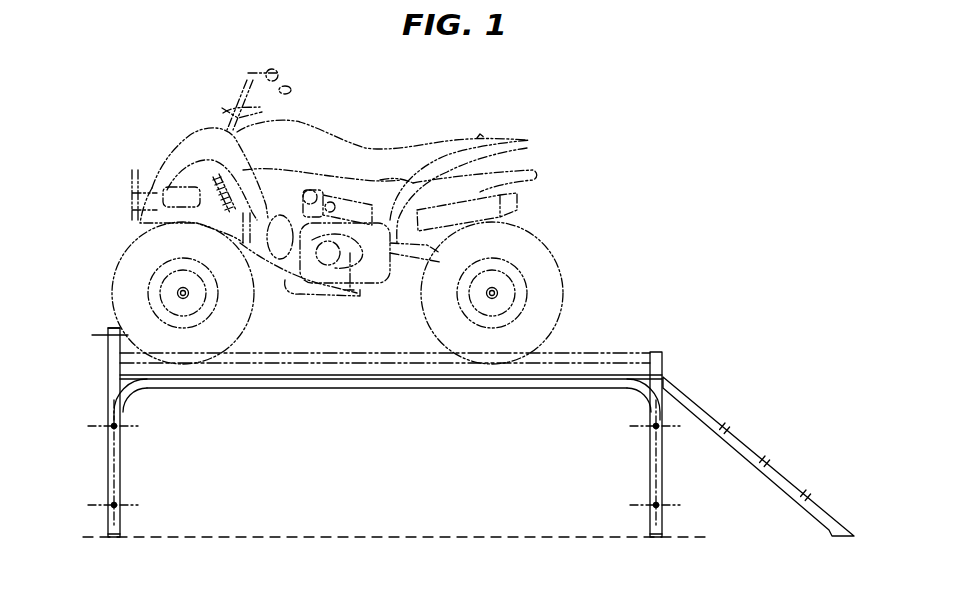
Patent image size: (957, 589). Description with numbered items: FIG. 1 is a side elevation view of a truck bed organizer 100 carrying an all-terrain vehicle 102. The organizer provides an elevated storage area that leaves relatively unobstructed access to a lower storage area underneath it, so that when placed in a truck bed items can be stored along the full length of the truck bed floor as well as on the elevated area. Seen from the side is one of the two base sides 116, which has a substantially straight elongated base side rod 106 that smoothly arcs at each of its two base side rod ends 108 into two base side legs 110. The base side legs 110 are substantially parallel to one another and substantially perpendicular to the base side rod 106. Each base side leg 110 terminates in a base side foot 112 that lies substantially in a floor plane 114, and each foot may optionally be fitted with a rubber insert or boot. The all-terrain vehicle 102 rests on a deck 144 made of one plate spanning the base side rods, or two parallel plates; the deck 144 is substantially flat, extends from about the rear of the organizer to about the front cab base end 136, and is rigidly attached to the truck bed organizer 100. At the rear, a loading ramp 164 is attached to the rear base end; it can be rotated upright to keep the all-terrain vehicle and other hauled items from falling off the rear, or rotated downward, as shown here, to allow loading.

The truck bed organizer 100 is at (640, 315).
The all-terrain vehicle 102 is at (536, 128).
The base side rod 106 is at (325, 389).
The base side rod end 108 is at (126, 398).
The base side leg 110 is at (121, 468).
The base side foot 112 is at (121, 535).
The floor plane 114 is at (343, 537).
The base side 116 is at (468, 400).
The front cab base end 136 is at (99, 364).
The deck 144 is at (327, 362).
The loading ramp 164 is at (725, 403).